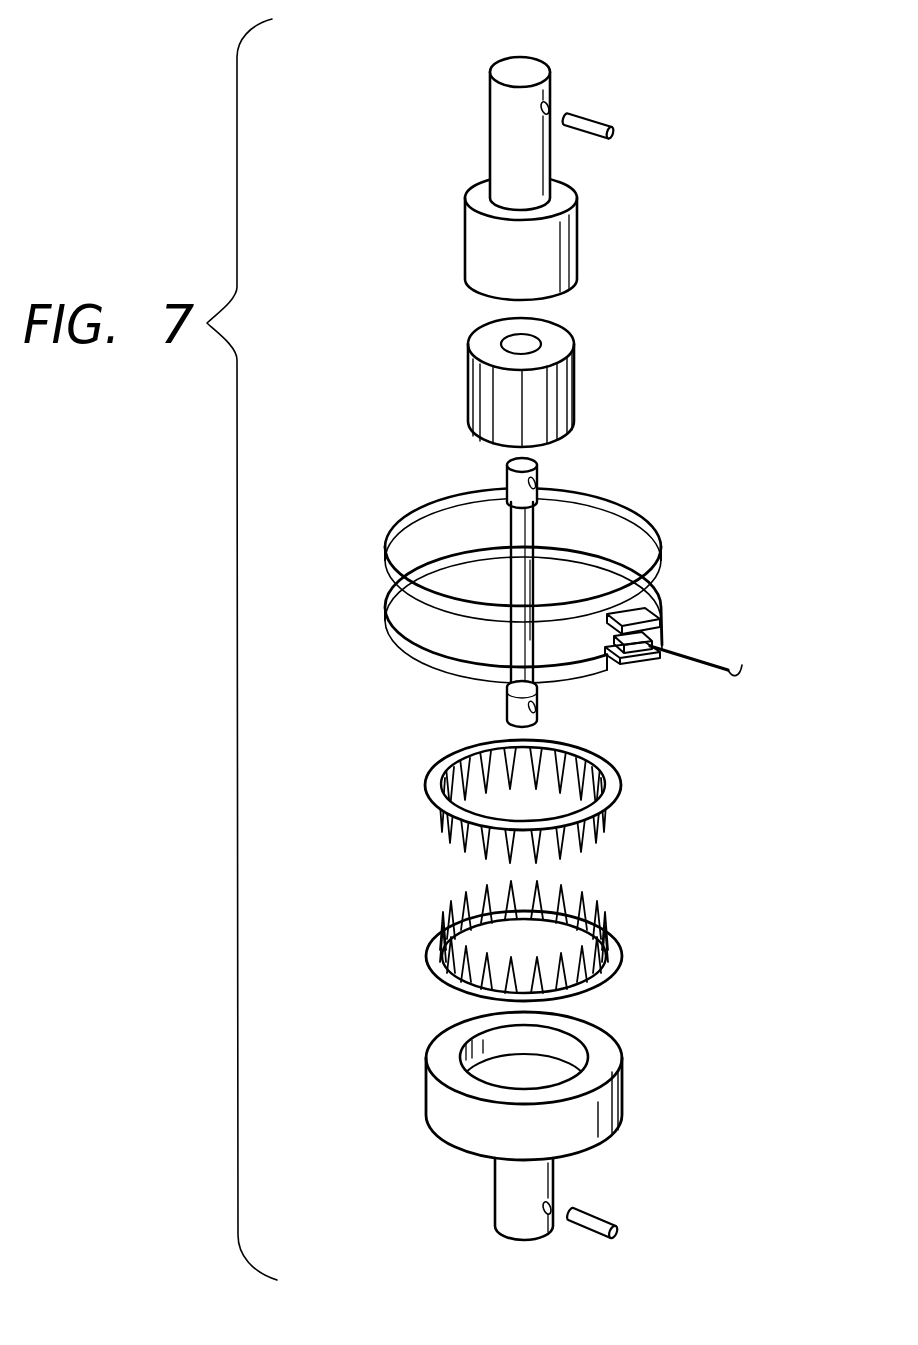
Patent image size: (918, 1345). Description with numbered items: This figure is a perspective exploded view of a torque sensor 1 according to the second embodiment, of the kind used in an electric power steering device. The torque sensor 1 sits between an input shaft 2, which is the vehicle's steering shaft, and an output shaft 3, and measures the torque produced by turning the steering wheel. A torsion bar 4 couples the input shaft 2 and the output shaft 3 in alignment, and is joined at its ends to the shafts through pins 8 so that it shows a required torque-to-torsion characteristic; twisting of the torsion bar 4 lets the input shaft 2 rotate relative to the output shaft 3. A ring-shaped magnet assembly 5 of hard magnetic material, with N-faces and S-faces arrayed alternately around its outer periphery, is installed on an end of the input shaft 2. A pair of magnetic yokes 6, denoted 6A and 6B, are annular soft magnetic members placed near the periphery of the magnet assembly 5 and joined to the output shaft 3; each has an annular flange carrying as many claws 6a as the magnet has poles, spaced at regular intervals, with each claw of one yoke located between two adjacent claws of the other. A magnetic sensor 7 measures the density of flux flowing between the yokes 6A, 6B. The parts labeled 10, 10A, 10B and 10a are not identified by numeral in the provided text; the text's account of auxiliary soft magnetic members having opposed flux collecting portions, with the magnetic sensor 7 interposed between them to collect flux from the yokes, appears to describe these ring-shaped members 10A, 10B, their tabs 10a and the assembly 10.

The torque sensor 1 is at (432, 128).
The input shaft 2 is at (533, 64).
The output shaft 3 is at (607, 1112).
The torsion bar 4 is at (520, 535).
The magnet assembly 5 is at (557, 392).
The magnetic yokes 6 is at (598, 870).
The magnetic yoke 6A is at (613, 782).
The magnetic yoke 6B is at (613, 951).
The claws 6a is at (500, 843).
The magnetic sensor 7 is at (656, 645).
The pins 8 is at (590, 127).
The magnetic flux collecting ring 10 is at (582, 609).
The upper flux collecting ring 10A is at (640, 516).
The lower flux collecting ring 10B is at (587, 670).
The ring tab 10a is at (636, 622).